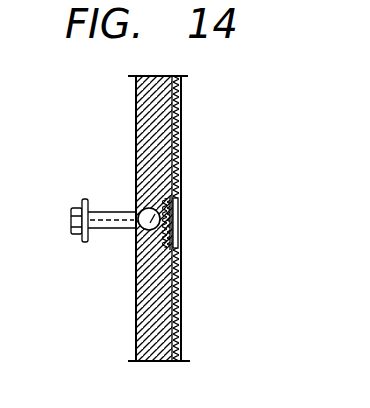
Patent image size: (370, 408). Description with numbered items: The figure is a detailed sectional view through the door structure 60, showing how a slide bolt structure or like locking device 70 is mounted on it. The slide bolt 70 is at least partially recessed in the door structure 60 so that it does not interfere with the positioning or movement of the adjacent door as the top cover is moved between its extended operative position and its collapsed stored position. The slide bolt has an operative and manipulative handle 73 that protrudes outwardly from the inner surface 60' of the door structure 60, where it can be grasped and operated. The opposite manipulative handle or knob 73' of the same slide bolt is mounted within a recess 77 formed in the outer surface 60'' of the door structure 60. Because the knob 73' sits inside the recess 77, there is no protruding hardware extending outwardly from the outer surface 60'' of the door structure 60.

The door structure 60 is at (191, 208).
The inner surface 60' is at (94, 217).
The outer surface 60'' is at (218, 218).
The recess 77 is at (180, 186).
The opposite manipulative handle or knob 73' is at (209, 230).
The manipulative handle 73 is at (75, 204).
The slide bolt structure 70 is at (138, 235).